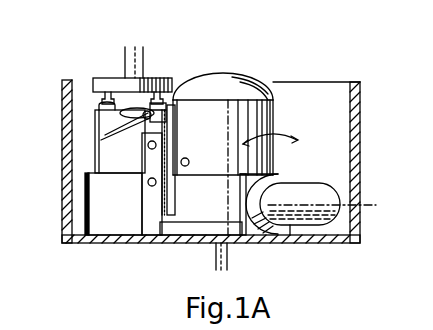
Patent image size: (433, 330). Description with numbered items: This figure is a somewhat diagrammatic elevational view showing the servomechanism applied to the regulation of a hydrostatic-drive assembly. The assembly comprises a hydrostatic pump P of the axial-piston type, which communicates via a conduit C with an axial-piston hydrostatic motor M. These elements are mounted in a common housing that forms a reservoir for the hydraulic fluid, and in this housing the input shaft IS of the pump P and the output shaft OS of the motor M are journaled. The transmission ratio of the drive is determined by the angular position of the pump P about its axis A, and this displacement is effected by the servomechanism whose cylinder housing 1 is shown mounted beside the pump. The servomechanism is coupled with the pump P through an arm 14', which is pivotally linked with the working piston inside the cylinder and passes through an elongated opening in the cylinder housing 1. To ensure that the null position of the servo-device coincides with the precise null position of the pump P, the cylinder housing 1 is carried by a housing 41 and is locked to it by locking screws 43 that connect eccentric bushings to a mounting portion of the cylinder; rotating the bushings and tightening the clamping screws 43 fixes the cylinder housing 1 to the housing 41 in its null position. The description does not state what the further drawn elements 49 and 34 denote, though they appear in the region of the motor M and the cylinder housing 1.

The output shaft OS is at (125, 52).
The hydrostatic motor M is at (95, 133).
The lever 49 is at (126, 132).
The switch block 34 is at (166, 124).
The locking screw 43 is at (145, 182).
The housing 41 is at (150, 210).
The cylinder housing 1 is at (177, 195).
The hydrostatic pump P is at (232, 76).
The arm 14' is at (204, 167).
The conduit C is at (322, 196).
The axis A is at (366, 206).
The input shaft IS is at (228, 262).